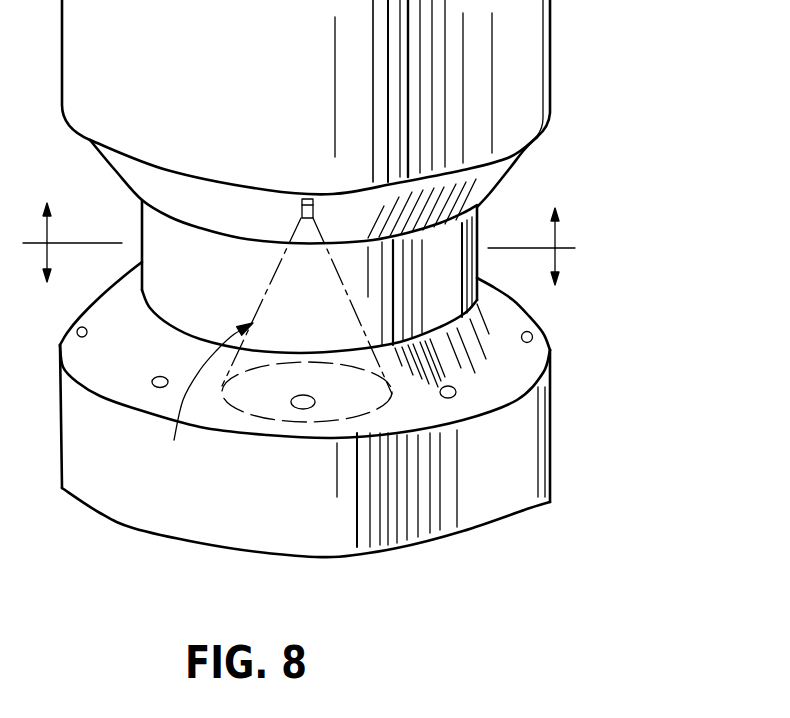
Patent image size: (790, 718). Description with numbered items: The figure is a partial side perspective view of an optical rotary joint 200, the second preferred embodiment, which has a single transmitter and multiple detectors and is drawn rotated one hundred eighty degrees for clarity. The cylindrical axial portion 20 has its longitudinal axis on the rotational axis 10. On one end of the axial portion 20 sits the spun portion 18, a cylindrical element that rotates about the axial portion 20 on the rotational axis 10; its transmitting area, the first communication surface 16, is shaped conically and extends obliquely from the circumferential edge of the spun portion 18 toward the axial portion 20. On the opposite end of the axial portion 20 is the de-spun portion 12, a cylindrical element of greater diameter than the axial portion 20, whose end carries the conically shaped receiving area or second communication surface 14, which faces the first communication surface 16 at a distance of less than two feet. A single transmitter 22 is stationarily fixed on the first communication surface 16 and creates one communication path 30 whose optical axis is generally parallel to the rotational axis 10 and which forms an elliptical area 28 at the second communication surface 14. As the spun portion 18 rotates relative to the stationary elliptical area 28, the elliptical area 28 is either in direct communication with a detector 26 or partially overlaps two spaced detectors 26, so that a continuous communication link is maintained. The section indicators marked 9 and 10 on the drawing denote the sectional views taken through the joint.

The de-spun portion 12 is at (525, 472).
The second communication surface 14 is at (520, 373).
The first communication surface 16 is at (495, 173).
The spun portion 18 is at (533, 58).
The axial portion 20 is at (455, 237).
The transmitter 22 is at (302, 205).
The detector 26 is at (78, 335).
The elliptical area 28 is at (315, 413).
The communication path 30 is at (207, 398).
The optical rotary joint 200 is at (605, 191).
The section line 9 is at (299, 210).
The rotational axis 10 is at (304, 281).